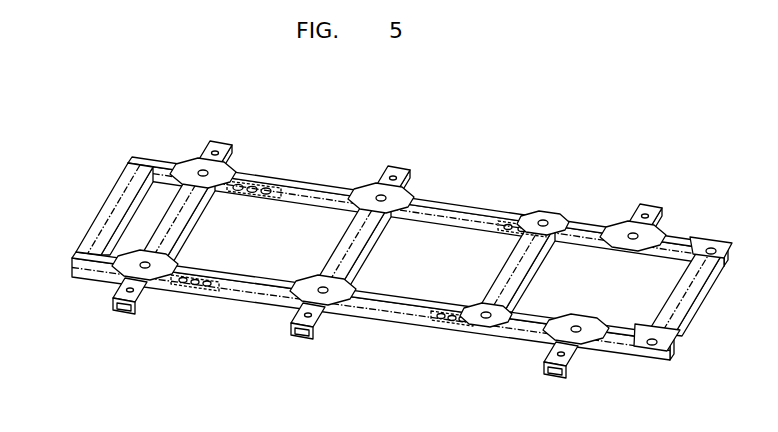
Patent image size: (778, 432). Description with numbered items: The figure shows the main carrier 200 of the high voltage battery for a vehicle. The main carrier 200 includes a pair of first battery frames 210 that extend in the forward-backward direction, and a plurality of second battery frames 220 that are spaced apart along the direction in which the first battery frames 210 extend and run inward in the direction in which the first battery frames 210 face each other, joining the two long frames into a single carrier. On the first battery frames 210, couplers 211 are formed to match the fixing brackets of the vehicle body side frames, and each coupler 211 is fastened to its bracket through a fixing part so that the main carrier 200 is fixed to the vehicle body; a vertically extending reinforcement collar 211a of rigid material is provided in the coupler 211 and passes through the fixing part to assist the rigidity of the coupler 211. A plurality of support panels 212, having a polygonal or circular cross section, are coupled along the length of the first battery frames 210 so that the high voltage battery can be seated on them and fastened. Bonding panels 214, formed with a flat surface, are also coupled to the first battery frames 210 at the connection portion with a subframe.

The main carrier 200 is at (387, 263).
The first battery frame 210 is at (500, 211).
The coupler 211 is at (650, 205).
The reinforcement collar 211a is at (122, 314).
The support panel 212 is at (128, 262).
The bonding panel 214 is at (262, 188).
The second battery frame 220 is at (115, 218).